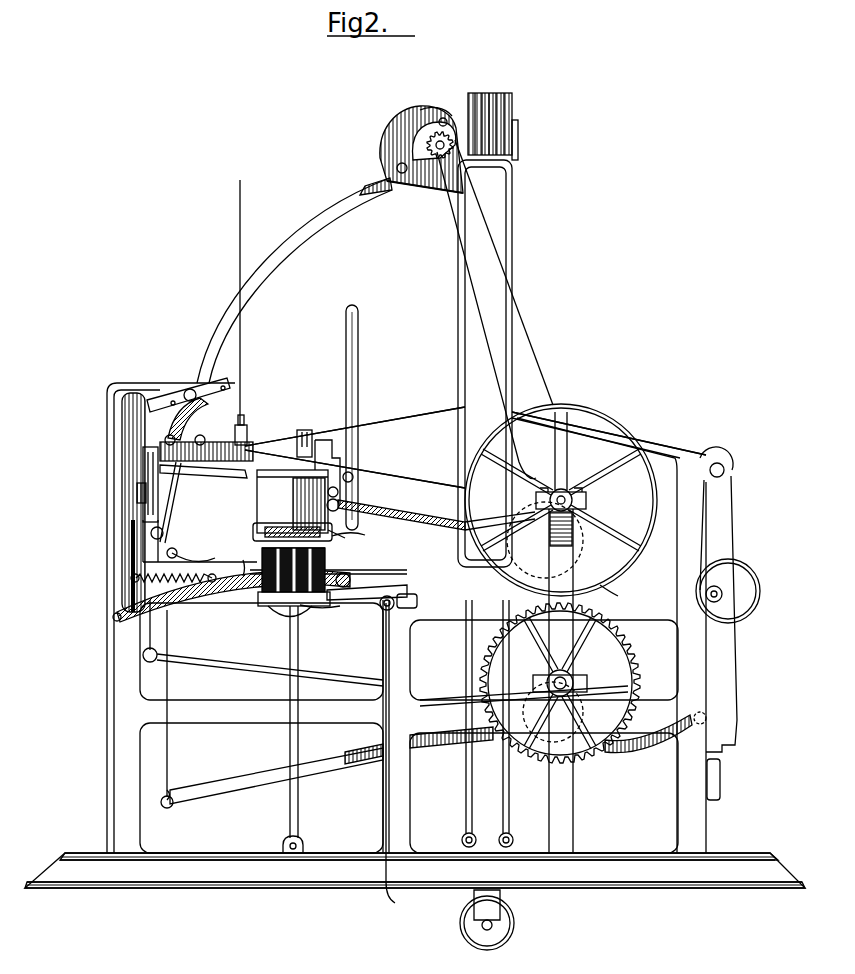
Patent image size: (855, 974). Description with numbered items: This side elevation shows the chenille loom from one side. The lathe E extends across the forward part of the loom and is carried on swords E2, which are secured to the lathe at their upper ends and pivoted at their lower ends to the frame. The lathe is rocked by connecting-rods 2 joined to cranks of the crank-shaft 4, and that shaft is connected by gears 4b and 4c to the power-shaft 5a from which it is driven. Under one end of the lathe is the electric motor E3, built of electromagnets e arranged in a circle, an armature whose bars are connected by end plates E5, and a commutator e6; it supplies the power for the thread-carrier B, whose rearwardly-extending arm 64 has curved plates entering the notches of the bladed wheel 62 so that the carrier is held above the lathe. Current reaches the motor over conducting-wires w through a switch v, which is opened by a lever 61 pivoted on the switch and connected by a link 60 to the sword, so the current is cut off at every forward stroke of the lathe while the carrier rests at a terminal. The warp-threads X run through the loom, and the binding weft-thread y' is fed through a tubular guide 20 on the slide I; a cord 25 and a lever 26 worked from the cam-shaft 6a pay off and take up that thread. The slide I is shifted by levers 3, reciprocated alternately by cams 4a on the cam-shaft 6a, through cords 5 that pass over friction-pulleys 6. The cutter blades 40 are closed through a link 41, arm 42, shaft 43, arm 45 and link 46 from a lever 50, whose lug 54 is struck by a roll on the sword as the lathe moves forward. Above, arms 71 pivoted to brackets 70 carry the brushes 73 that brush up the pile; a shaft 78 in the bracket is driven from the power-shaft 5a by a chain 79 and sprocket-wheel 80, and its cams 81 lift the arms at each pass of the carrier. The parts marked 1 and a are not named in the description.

The link 1 is at (335, 535).
The connecting-rods 2 is at (410, 520).
The levers 3 is at (236, 784).
The crank-shaft 4 is at (556, 560).
The cams 4a is at (540, 680).
The gear 4b is at (600, 594).
The gear 4c is at (574, 480).
The cords 5 is at (170, 680).
The power-shaft 5a is at (590, 500).
The friction-pulleys 6 is at (168, 497).
The cam-shaft 6a is at (578, 682).
The tubular guide 20 is at (219, 431).
The band or cord 25 is at (158, 646).
The lever 26 is at (236, 668).
The cutting-blades 40 is at (220, 474).
The link 41 is at (170, 503).
The arm 42 is at (164, 534).
The shaft 43 is at (152, 540).
The arm 45 is at (178, 553).
The link 46 is at (204, 551).
The lever 50 is at (243, 558).
The lug 54 is at (228, 592).
The link 60 is at (365, 588).
The lever 61 is at (417, 596).
The bladed wheel 62 is at (340, 492).
The rearwardly-extending arm 64 is at (332, 455).
The brackets 70 is at (430, 192).
The parallel arms 71 is at (280, 286).
The parallel brushes 73 is at (128, 432).
The shaft 78 is at (435, 145).
The chain 79 is at (478, 208).
The sprocket-wheel 80 is at (412, 126).
The cams 81 is at (444, 118).
The thread-carrier B is at (308, 430).
The lathe E is at (292, 505).
The swords E2 is at (300, 656).
The electric motor E3 is at (325, 572).
The end plates E5 is at (268, 600).
The slide I is at (142, 465).
The warp-threads X is at (407, 420).
The rod a is at (359, 376).
The electromagnets e is at (357, 532).
The commutator e6 is at (290, 615).
The switch v is at (394, 604).
The conducting-wires w is at (322, 610).
The binding weft-thread y' is at (253, 312).